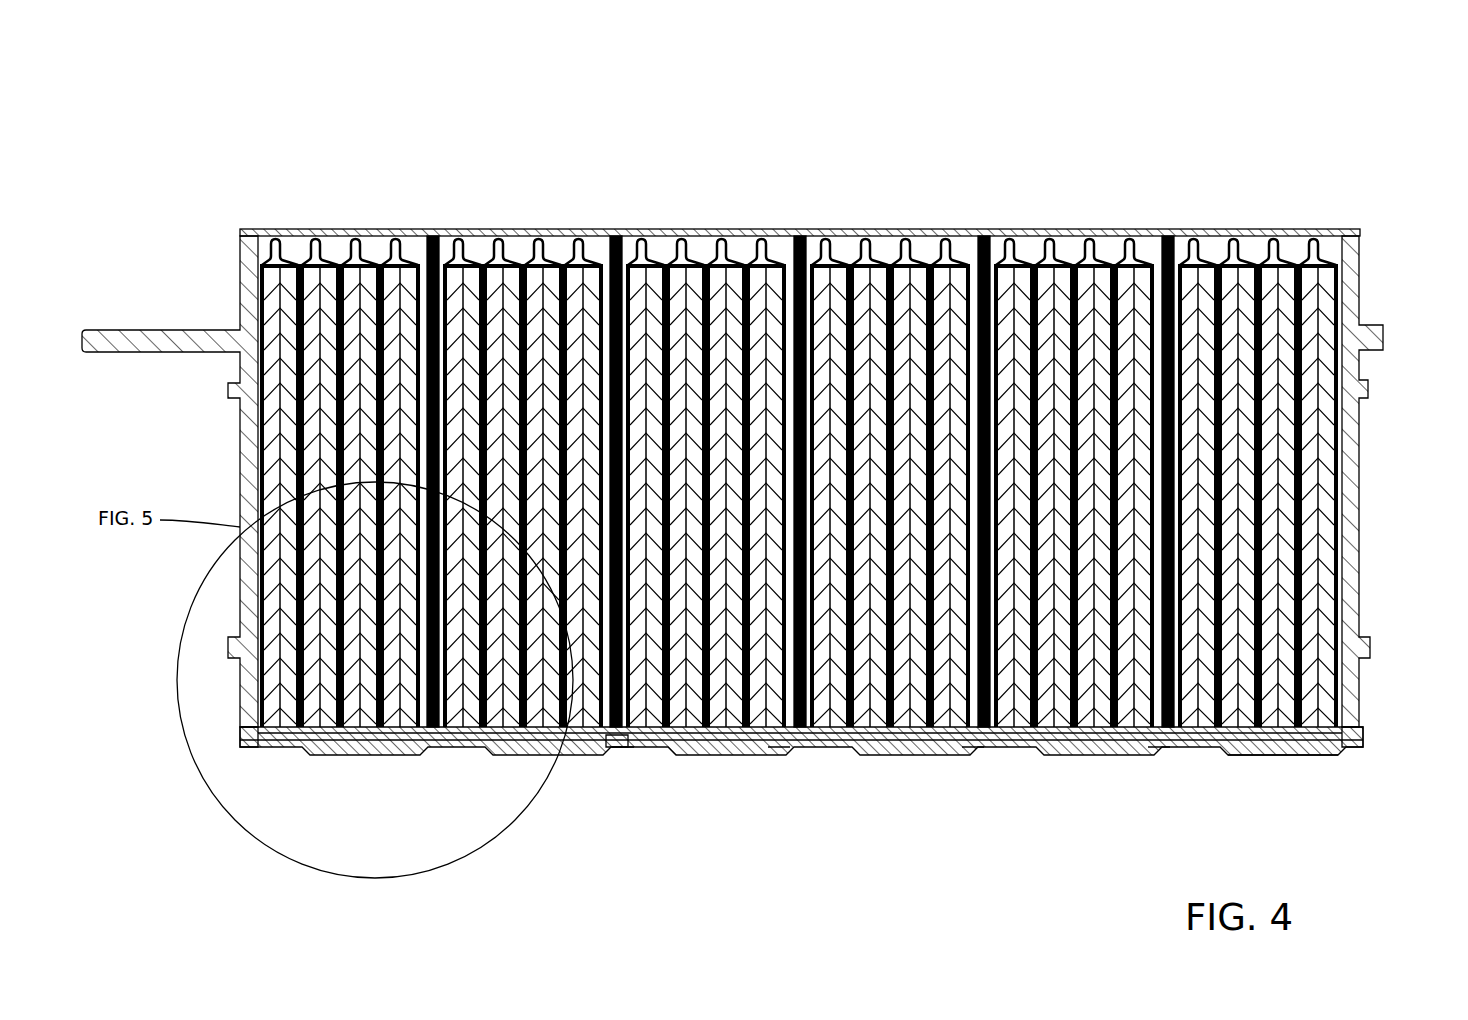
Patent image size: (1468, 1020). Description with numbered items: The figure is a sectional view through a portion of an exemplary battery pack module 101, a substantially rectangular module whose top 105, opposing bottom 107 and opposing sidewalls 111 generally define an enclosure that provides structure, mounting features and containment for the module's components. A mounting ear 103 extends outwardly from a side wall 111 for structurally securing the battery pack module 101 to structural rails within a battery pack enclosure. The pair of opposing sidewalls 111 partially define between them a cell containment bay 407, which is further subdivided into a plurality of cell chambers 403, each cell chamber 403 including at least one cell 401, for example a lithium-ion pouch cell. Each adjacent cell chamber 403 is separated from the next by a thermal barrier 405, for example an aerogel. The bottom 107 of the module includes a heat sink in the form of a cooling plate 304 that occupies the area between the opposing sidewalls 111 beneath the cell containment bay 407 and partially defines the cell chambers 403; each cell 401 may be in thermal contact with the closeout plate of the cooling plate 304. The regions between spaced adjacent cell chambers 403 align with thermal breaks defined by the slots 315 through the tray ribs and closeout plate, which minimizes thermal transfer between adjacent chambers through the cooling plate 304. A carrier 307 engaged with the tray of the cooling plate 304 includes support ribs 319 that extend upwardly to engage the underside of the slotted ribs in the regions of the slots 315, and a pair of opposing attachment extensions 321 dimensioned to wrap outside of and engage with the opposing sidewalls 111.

The battery pack module 101 is at (771, 473).
The cell containment bay 407 is at (800, 389).
The cell 401 is at (338, 228).
The cell chamber 403 is at (795, 222).
The thermal barrier 405 is at (800, 443).
The top 105 is at (823, 210).
The mounting ear 103 is at (115, 328).
The side wall 111 is at (230, 468).
The cooling plate 304 is at (248, 738).
The through slot 315 is at (618, 740).
The support rib 319 is at (623, 768).
The bottom 107 is at (862, 820).
The carrier 307 is at (1233, 758).
The attachment extension 321 is at (1364, 732).